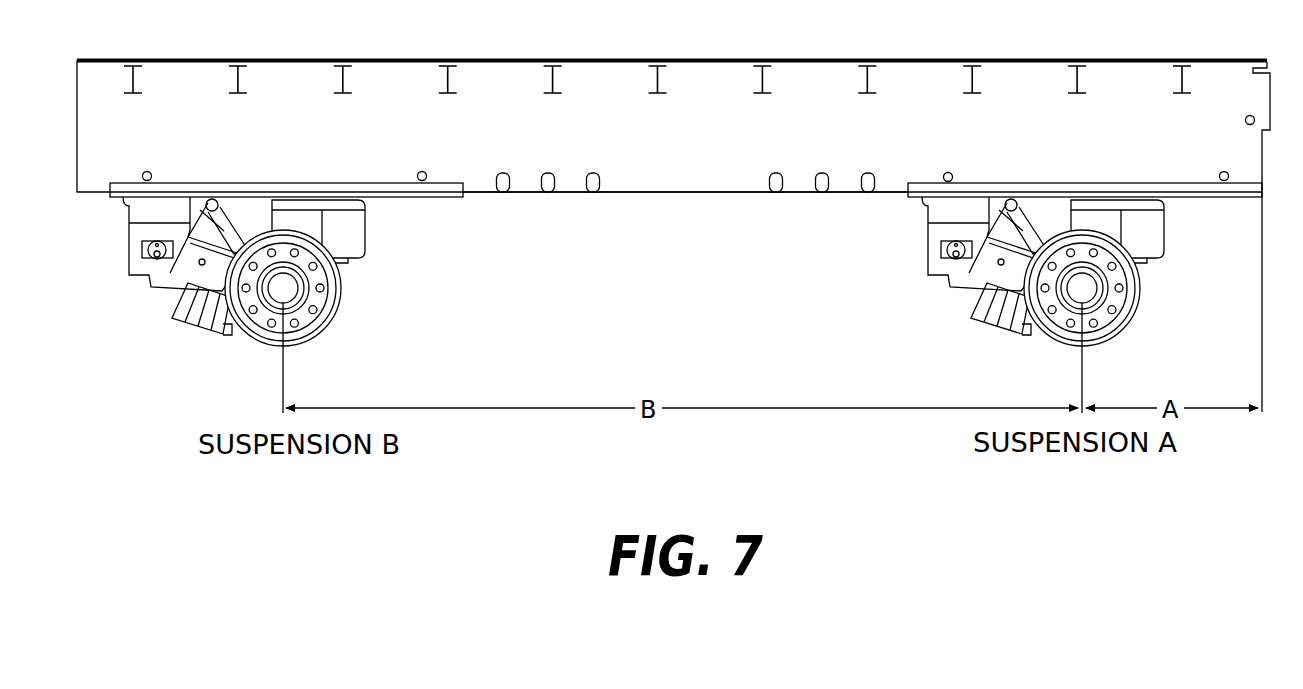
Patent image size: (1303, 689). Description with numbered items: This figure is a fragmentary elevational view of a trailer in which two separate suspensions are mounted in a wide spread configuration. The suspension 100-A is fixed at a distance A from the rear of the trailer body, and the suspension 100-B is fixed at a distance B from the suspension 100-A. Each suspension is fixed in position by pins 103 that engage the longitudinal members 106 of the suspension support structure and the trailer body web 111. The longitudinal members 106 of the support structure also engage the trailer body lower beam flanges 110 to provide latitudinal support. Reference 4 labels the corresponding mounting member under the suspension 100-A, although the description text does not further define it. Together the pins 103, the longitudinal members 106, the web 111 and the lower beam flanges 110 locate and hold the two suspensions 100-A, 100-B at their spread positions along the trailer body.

The mounting beam for suspension A 4 is at (1180, 202).
The pins 103 is at (150, 173).
The longitudinal members 106 is at (382, 203).
The trailer body lower beam flanges 110 is at (583, 196).
The trailer body web 111 is at (503, 184).
The suspension 100-A is at (1143, 313).
The suspension 100-B is at (343, 315).